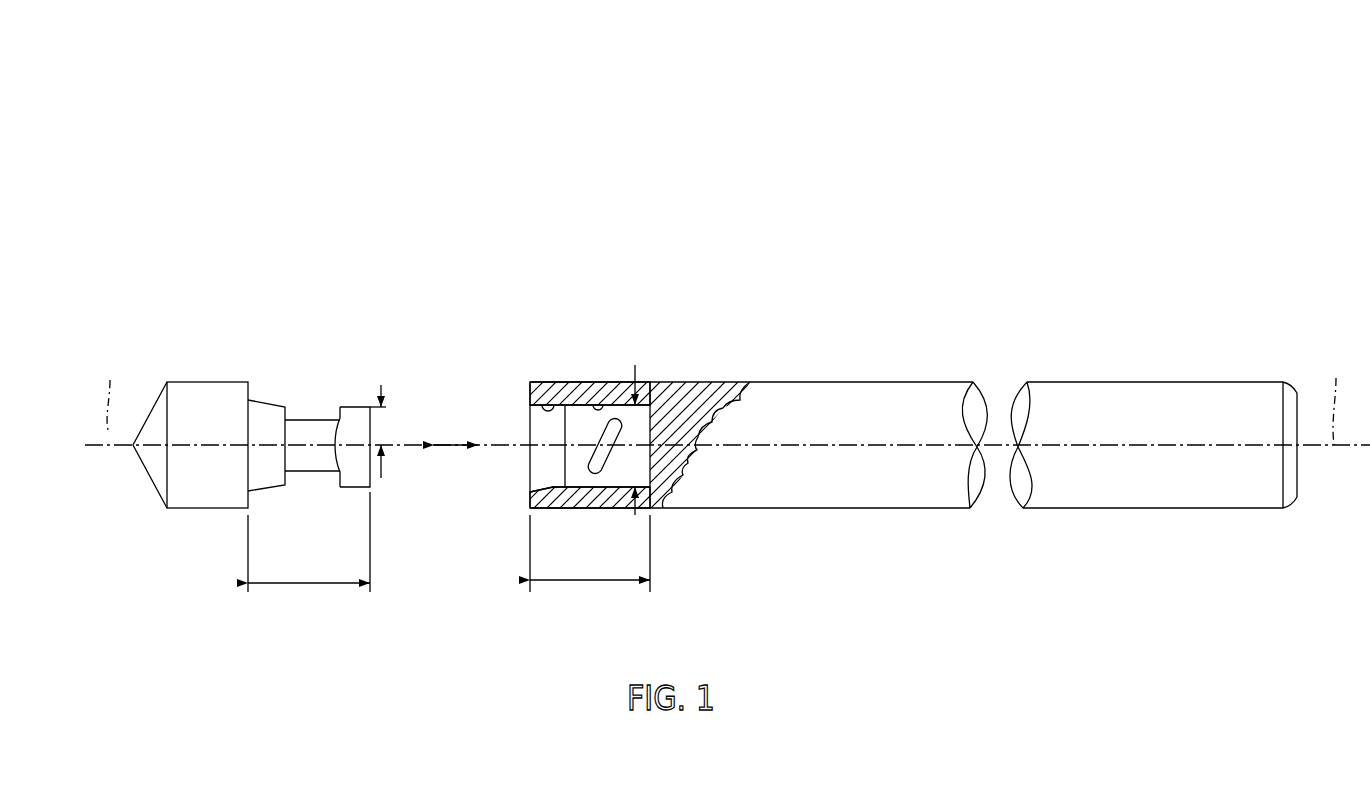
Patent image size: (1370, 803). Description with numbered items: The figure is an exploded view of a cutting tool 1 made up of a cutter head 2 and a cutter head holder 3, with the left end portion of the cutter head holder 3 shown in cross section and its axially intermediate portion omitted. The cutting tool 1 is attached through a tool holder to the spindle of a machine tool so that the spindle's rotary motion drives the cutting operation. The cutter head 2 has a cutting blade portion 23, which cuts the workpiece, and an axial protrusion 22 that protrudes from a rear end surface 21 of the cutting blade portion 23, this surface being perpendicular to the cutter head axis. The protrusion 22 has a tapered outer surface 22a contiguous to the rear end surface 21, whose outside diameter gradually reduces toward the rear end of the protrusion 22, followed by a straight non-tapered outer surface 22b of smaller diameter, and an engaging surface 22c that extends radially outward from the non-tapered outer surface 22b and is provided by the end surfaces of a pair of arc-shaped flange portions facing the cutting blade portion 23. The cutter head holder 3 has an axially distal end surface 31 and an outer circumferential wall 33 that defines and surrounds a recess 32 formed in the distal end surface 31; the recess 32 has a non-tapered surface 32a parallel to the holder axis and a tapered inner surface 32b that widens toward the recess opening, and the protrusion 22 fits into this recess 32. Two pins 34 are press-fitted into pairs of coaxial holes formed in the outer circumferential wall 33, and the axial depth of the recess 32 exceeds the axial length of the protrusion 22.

The cutting tool 1 is at (1095, 155).
The cutter head 2 is at (333, 280).
The cutter head holder 3 is at (1202, 307).
The rear end surface 21 is at (248, 389).
The axial protrusion 22 is at (400, 343).
The tapered outer surface 22a is at (308, 418).
The non-tapered outer surface 22b is at (313, 418).
The engaging surface 22c is at (343, 405).
The cutting blade portion 23 is at (158, 400).
The axially distal end surface 31 is at (530, 388).
The recess 32 is at (627, 320).
The non-tapered surface 32a is at (598, 400).
The tapered inner surface 32b is at (548, 400).
The outer circumferential wall 33 is at (581, 395).
The pin 34 is at (605, 455).